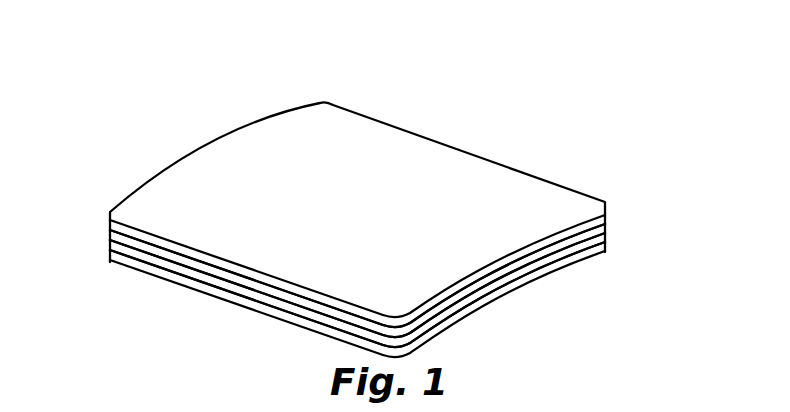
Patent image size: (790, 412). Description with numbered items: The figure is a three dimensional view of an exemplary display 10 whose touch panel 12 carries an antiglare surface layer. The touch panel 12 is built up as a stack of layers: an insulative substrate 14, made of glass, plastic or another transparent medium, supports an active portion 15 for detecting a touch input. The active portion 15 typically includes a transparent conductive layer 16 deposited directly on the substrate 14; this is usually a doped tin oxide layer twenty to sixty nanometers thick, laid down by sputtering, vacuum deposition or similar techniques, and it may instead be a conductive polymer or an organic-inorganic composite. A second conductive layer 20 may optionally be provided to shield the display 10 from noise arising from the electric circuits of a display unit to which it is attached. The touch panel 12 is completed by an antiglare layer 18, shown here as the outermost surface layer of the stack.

The display 10 is at (390, 108).
The touch panel 12 is at (102, 210).
The insulative substrate 14 is at (606, 236).
The active portion 15 is at (667, 175).
The transparent conductive layer 16 is at (606, 226).
The antiglare layer 18 is at (606, 215).
The second conductive layer 20 is at (606, 249).